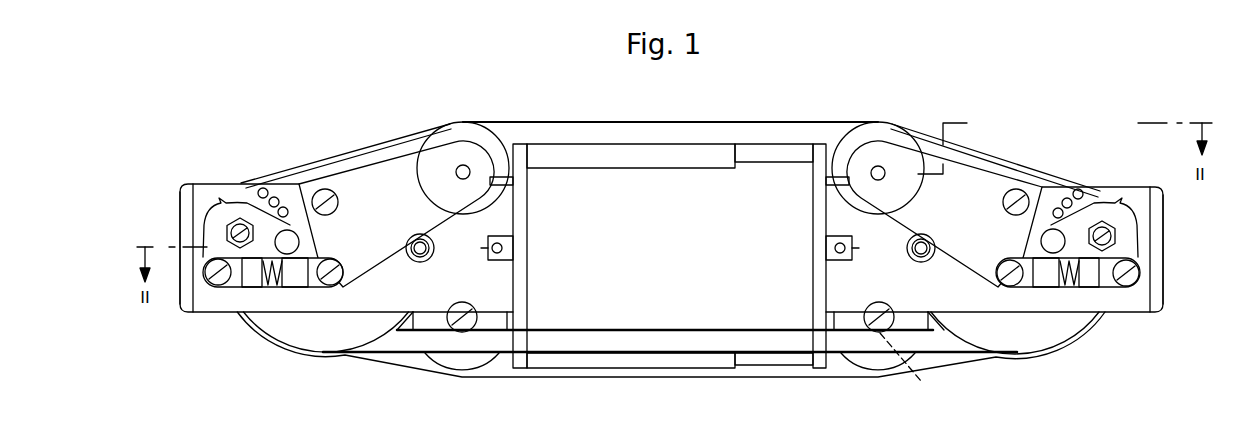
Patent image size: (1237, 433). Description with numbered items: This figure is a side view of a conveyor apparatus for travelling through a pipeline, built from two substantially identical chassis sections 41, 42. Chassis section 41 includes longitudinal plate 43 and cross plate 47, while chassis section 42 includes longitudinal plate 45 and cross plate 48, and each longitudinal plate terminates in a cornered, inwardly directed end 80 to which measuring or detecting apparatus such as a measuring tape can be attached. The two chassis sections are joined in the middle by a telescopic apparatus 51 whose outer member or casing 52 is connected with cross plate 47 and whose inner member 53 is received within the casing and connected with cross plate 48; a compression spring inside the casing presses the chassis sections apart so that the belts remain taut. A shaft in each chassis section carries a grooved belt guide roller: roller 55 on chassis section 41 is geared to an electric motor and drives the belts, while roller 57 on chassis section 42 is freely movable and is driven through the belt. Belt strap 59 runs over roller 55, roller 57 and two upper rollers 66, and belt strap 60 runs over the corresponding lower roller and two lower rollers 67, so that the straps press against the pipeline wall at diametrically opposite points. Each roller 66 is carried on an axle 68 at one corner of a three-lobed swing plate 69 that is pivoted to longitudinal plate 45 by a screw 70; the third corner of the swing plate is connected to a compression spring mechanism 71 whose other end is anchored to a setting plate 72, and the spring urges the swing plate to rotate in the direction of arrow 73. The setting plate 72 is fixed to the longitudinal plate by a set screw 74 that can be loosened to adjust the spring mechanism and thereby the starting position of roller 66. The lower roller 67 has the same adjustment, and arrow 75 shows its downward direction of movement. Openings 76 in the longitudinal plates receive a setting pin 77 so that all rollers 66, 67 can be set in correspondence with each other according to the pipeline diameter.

The chassis section 41 is at (190, 318).
The chassis section 42 is at (1131, 326).
The longitudinal plate 43 is at (202, 298).
The longitudinal plate 45 is at (1142, 292).
The cross plate 47 is at (513, 368).
The cross plate 48 is at (820, 366).
The telescopic apparatus 51 is at (685, 327).
The outer member or casing 52 is at (697, 150).
The inner member 53 is at (778, 150).
The belt guide roller 55 is at (287, 318).
The belt guide roller 57 is at (1033, 328).
The belt strap 59 is at (601, 133).
The belt strap 60 is at (373, 357).
The upper roller (swivel roller) 66 is at (459, 138).
The lower roller (swivel roller) 67 is at (455, 363).
The axle 68 is at (881, 172).
The swing plate 69 is at (956, 207).
The screw 70 is at (1019, 190).
The compression spring mechanism 71 is at (1068, 284).
The setting plate 72 is at (1128, 242).
The arrow 73 is at (909, 120).
The set screw 74 is at (1116, 228).
The arrow 75 is at (927, 387).
The openings or depressions 76 is at (1064, 212).
The setting pin 77 is at (1058, 240).
The inwardly directed ends 80 is at (188, 200).